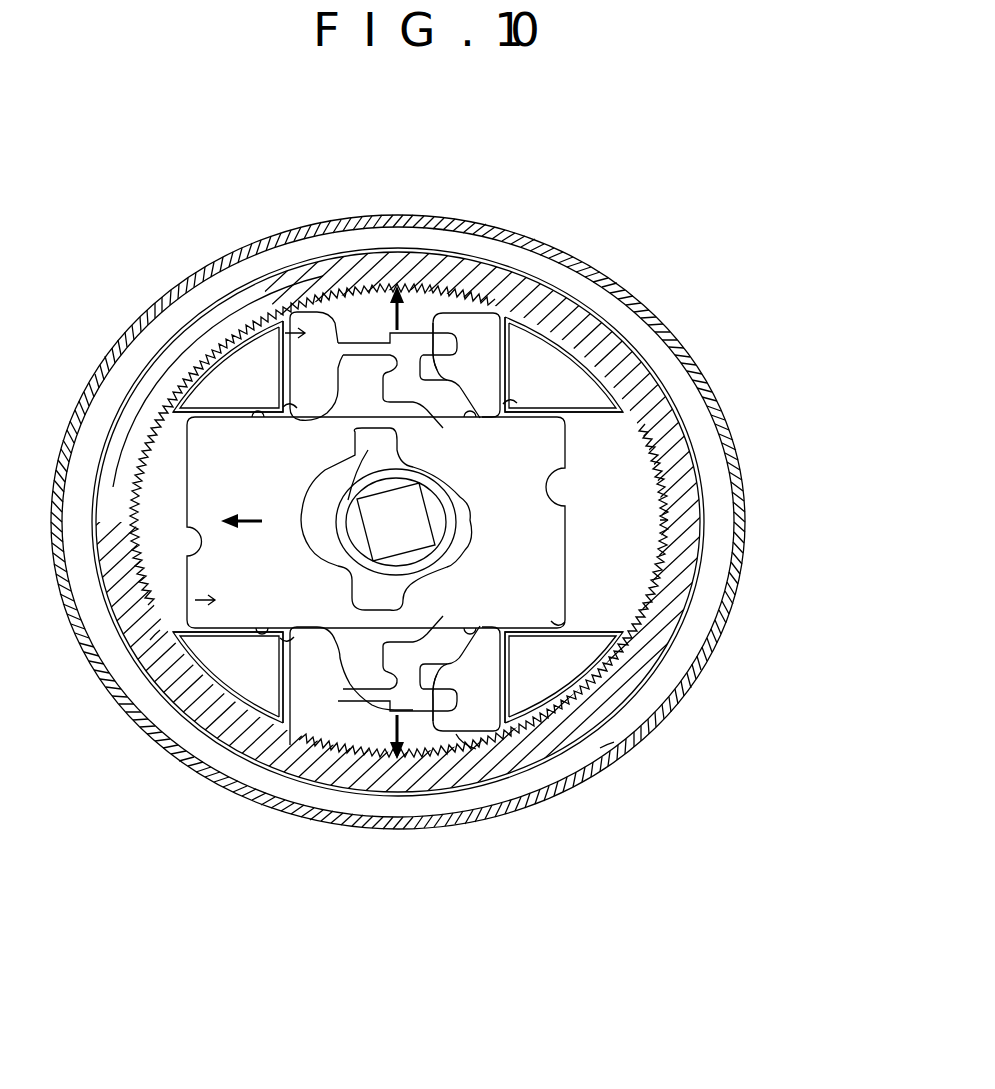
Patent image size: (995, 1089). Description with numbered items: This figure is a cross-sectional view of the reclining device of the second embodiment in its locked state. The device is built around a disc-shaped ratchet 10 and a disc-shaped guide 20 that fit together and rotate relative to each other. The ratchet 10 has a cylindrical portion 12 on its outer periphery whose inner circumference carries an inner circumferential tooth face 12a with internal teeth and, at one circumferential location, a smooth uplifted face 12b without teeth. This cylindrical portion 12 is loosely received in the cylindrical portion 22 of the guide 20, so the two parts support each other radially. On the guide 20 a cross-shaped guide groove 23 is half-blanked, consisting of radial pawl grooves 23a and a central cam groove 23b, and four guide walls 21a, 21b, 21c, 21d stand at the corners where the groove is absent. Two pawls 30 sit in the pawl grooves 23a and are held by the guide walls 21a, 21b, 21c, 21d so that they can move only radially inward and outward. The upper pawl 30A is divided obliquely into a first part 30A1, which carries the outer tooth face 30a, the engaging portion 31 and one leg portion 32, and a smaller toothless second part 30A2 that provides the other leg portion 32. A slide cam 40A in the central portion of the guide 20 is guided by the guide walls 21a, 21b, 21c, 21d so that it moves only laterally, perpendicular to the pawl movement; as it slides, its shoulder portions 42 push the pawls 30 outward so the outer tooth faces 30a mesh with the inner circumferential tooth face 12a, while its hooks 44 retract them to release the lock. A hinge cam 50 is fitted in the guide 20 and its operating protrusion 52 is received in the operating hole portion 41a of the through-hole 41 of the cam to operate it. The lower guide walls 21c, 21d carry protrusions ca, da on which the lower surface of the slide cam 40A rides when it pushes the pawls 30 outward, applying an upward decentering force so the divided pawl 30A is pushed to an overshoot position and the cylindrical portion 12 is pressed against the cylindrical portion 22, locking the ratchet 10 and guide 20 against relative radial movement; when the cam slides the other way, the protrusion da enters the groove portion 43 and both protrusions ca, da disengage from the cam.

The ratchet 10 is at (426, 526).
The cylindrical portion 12 is at (426, 526).
The inner circumferential tooth face 12a is at (725, 452).
The uplifted face 12b is at (697, 372).
The guide 20 is at (467, 521).
The guide wall 21a is at (590, 330).
The guide wall 21b is at (195, 348).
The guide wall 21c is at (240, 677).
The guide wall 21d is at (667, 720).
The cylindrical portion 22 is at (517, 262).
The guide groove 23 is at (496, 521).
The pawl groove 23a is at (388, 286).
The cam groove 23b is at (486, 563).
The pawl 30 is at (410, 541).
The pawl 30A is at (371, 541).
The first part 30A1 is at (437, 363).
The second part 30A2 is at (255, 320).
The outer tooth face 30a is at (333, 313).
The engaging portion 31 is at (470, 300).
The leg portion 32 is at (220, 387).
The slide cam 40A is at (200, 637).
The through-hole 41 is at (400, 522).
The operating hole portion 41a is at (367, 428).
The shoulder portion 42 is at (283, 407).
The groove portion 43 is at (257, 427).
The hook 44 is at (363, 360).
The hinge cam 50 is at (359, 518).
The operating protrusion 52 is at (365, 452).
The protrusion ca is at (157, 637).
The protrusion da is at (607, 747).